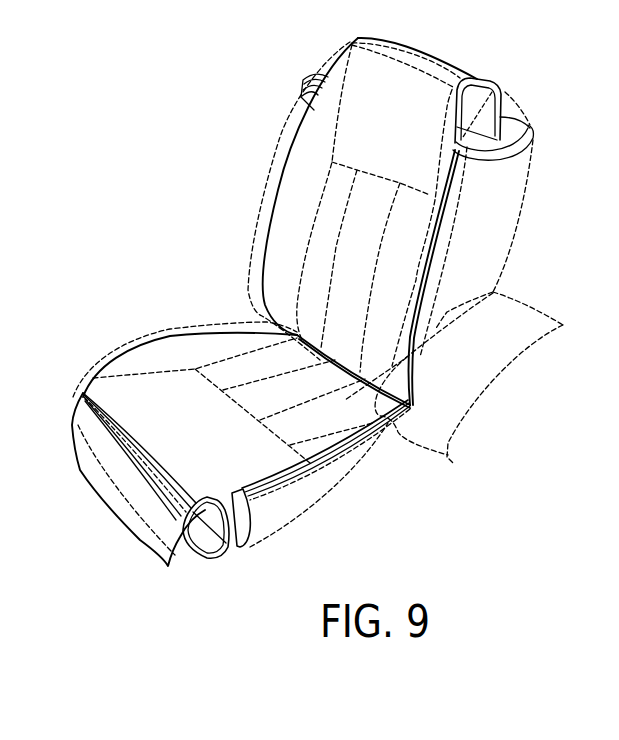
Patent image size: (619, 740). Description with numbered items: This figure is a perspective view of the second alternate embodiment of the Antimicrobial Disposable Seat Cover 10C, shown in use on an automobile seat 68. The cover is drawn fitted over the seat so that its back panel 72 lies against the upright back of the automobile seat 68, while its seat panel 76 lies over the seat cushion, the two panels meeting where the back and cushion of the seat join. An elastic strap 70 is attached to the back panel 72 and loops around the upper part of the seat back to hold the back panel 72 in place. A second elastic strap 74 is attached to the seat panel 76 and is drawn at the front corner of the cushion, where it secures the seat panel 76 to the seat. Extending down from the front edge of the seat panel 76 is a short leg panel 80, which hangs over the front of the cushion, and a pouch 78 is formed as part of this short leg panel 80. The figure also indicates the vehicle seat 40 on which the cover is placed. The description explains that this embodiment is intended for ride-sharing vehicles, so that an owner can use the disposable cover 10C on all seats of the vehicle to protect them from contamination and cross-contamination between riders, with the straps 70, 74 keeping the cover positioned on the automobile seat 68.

The Antimicrobial Disposable Seat Cover 10C is at (227, 152).
The vehicle seat 40 is at (0, 212).
The automobile seat 68 is at (482, 243).
The elastic strap 70 is at (510, 158).
The back panel 72 is at (287, 243).
The second elastic strap 74 is at (237, 535).
The seat panel 76 is at (163, 367).
The pouch 78 is at (122, 445).
The short leg panel 80 is at (122, 510).